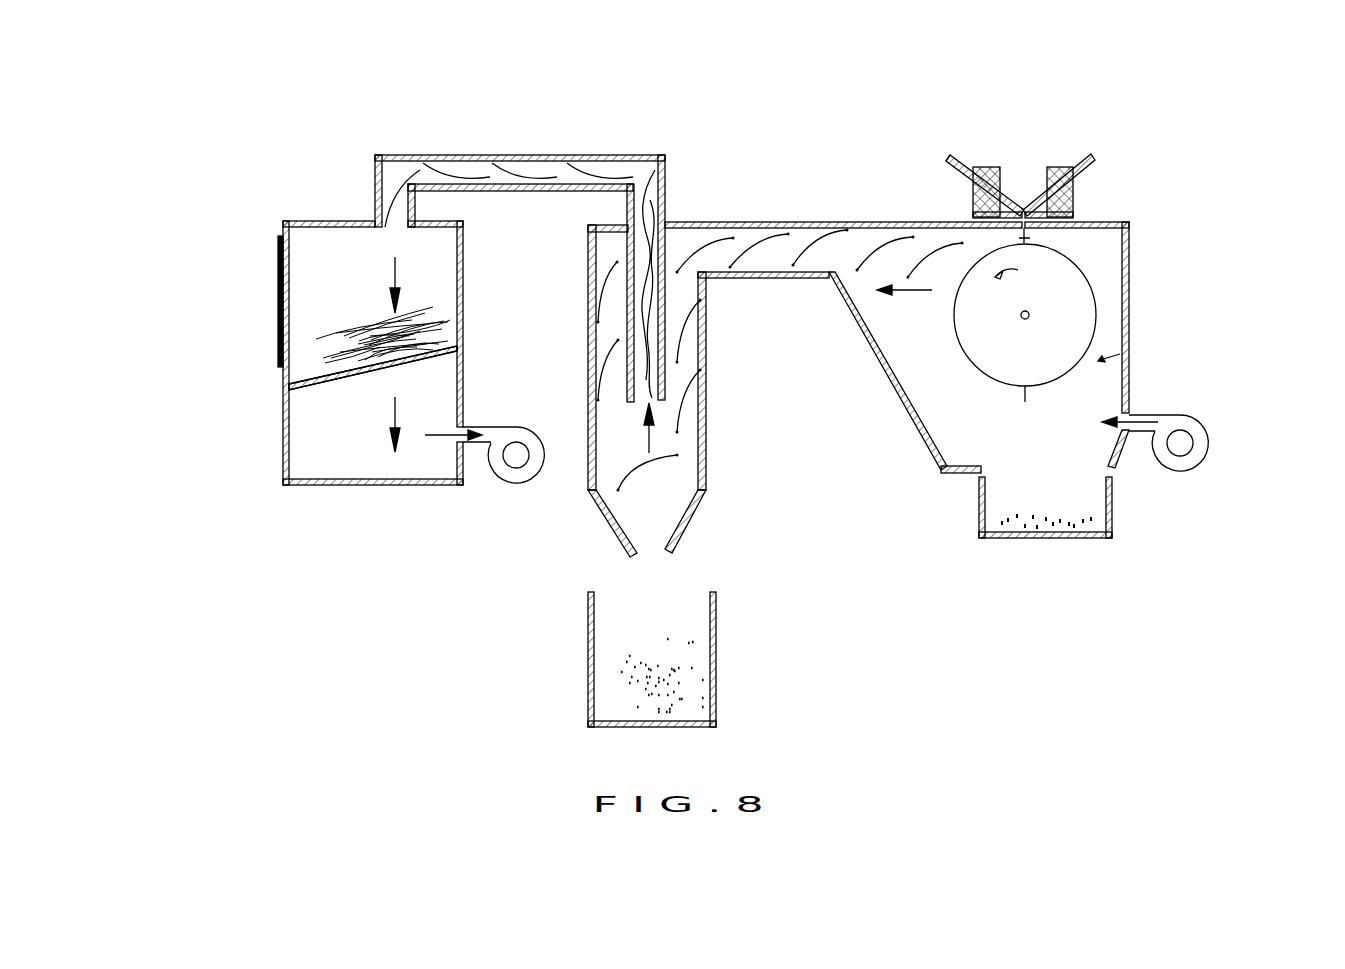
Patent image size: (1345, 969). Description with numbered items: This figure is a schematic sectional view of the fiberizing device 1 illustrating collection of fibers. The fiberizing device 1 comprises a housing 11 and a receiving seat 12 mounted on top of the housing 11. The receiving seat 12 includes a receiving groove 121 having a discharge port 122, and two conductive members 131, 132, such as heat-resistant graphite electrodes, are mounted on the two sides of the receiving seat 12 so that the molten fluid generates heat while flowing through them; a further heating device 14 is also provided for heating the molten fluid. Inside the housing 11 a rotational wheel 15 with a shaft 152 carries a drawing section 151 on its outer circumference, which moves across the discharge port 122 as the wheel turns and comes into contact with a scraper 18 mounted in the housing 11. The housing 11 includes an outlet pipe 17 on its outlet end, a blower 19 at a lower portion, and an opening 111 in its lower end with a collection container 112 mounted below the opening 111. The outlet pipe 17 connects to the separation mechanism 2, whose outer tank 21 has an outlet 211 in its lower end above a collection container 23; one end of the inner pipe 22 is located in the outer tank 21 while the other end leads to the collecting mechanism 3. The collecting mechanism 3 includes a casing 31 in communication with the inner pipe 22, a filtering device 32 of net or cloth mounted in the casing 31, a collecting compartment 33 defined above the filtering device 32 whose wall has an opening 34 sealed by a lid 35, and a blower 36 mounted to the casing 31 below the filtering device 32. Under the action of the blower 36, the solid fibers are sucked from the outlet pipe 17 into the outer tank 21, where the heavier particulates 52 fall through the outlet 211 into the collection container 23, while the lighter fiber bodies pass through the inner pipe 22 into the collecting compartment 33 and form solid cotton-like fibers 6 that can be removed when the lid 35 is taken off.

The fiberizing device 1 is at (950, 269).
The housing 11 is at (1128, 268).
The opening 111 is at (1040, 465).
The collection container 112 is at (1107, 505).
The receiving seat 12 is at (1030, 145).
The receiving groove 121 is at (1005, 178).
The discharge port 122 is at (1053, 190).
The conductive member 131 is at (1087, 157).
The conductive member 132 is at (967, 170).
The heating device 14 is at (955, 163).
The rotational wheel 15 is at (1097, 303).
The drawing section 151 is at (1032, 233).
The shaft 152 is at (1029, 315).
The outlet pipe 17 is at (785, 225).
The scraper 18 is at (1125, 362).
The blower 19 is at (1208, 455).
The separation mechanism 2 is at (705, 370).
The outer tank 21 is at (705, 333).
The outlet 211 is at (650, 555).
The inner pipe 22 is at (668, 250).
The collection container 23 is at (715, 630).
The collecting mechanism 3 is at (269, 345).
The casing 31 is at (462, 262).
The filtering device 32 is at (425, 353).
The collecting compartment 33 is at (344, 259).
The opening 34 is at (280, 246).
The lid 35 is at (280, 291).
The blower 36 is at (495, 425).
The particulates 52 is at (695, 707).
The solid cotton-like fibers 6 is at (329, 382).